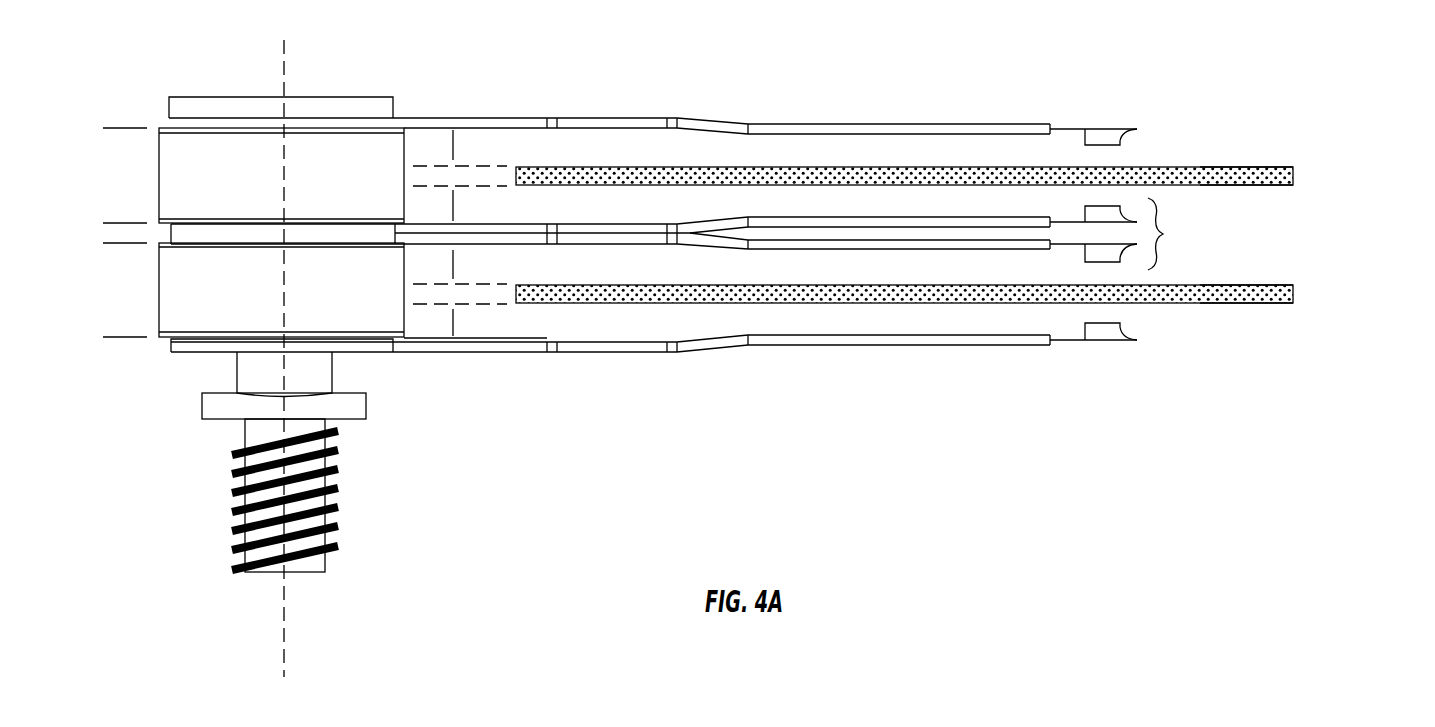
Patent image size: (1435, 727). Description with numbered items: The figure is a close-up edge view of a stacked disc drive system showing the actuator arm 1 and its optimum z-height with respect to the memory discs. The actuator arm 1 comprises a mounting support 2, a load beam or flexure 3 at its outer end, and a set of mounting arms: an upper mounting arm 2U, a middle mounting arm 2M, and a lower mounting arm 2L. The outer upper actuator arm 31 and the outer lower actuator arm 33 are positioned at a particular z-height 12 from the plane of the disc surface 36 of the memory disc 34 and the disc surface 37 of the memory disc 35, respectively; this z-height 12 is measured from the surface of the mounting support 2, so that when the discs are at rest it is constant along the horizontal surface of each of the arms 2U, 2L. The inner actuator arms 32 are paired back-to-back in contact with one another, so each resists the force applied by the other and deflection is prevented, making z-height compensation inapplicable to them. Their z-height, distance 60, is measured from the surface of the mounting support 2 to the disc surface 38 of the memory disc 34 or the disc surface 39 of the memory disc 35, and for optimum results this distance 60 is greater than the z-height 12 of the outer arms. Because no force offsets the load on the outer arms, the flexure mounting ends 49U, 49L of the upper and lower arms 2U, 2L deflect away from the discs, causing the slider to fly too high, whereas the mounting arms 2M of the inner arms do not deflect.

The actuator arm 1 is at (748, 107).
The mounting support 2 is at (122, 127).
The upper mounting arm 2U is at (403, 117).
The middle mounting arm 2M is at (532, 241).
The lower mounting arm 2L is at (384, 341).
The load beam or flexure 3 is at (972, 218).
The z-height 12 is at (455, 148).
The outer upper actuator arm 31 is at (757, 112).
The inner actuator arms 32 is at (1170, 233).
The outer lower actuator arm 33 is at (758, 354).
The memory disc 34 is at (1310, 172).
The memory disc 35 is at (1310, 294).
The disc surface 36 is at (1270, 165).
The disc surface 37 is at (1270, 304).
The disc surface 38 is at (1270, 187).
The disc surface 39 is at (1270, 284).
The flexure mounting end 49U is at (703, 118).
The flexure mounting end 49L is at (703, 353).
The z-height of the inner actuator arms 60 is at (456, 205).